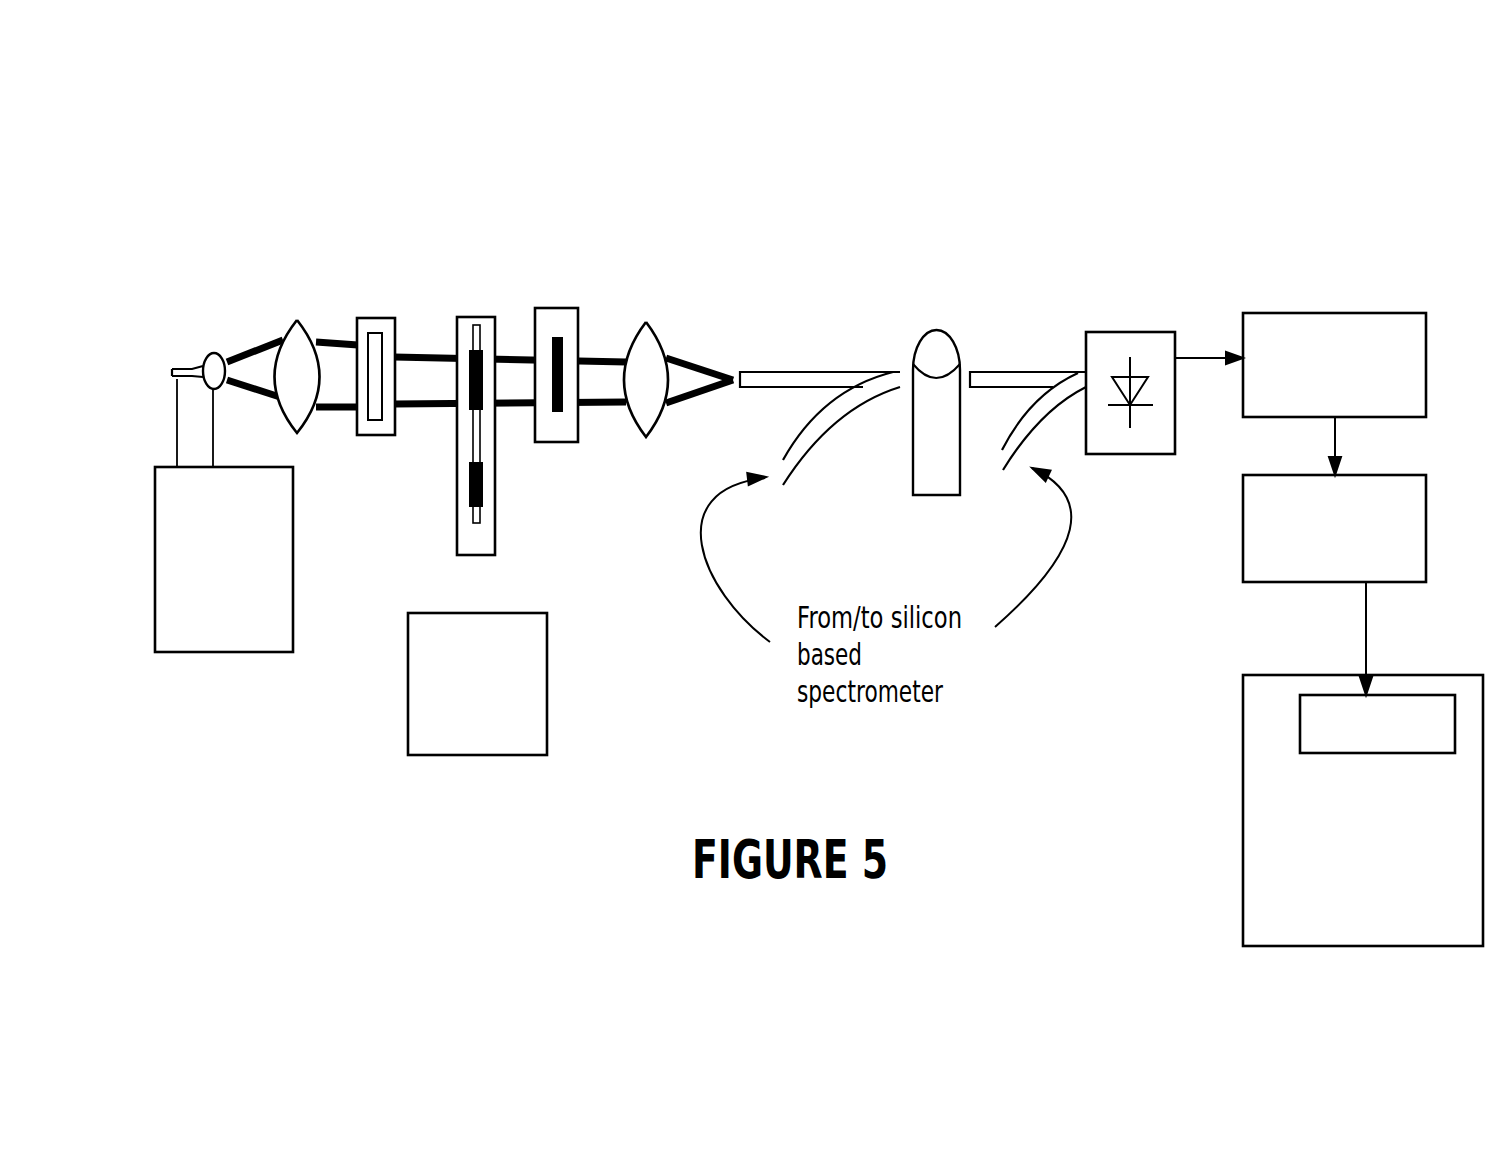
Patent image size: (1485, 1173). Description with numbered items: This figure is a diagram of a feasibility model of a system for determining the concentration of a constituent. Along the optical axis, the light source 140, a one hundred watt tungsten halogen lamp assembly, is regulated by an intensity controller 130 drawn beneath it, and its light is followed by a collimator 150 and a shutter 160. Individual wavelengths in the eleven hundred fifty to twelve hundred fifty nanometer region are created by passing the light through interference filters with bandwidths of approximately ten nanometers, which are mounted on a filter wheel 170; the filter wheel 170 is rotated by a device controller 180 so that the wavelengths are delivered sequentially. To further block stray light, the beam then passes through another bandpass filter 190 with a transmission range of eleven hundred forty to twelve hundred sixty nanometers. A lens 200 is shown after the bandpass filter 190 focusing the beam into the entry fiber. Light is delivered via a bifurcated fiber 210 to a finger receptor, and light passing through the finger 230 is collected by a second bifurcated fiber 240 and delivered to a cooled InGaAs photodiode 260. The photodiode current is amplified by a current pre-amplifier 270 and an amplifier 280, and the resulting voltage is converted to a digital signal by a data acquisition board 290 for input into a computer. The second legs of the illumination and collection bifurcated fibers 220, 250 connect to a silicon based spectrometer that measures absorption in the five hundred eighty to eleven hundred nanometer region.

The intensity controller 130 is at (218, 653).
The light source 140 is at (213, 352).
The collimator 150 is at (300, 320).
The shutter 160 is at (380, 318).
The filter wheel 170 is at (475, 317).
The device controller 180 is at (408, 703).
The bandpass filter 190 is at (557, 308).
The focusing lens 200 is at (647, 322).
The bifurcated fiber 210 is at (802, 372).
The second leg of illumination bifurcated fiber 220 is at (866, 404).
The finger 230 is at (953, 333).
The bifurcated fiber 240 is at (1037, 372).
The second leg of collection bifurcated fiber 250 is at (1006, 460).
The InGaAs photodiode 260 is at (1133, 332).
The current pre-amplifier 270 is at (1362, 313).
The amplifier 280 is at (1243, 527).
The data acquisition board 290 is at (1380, 753).